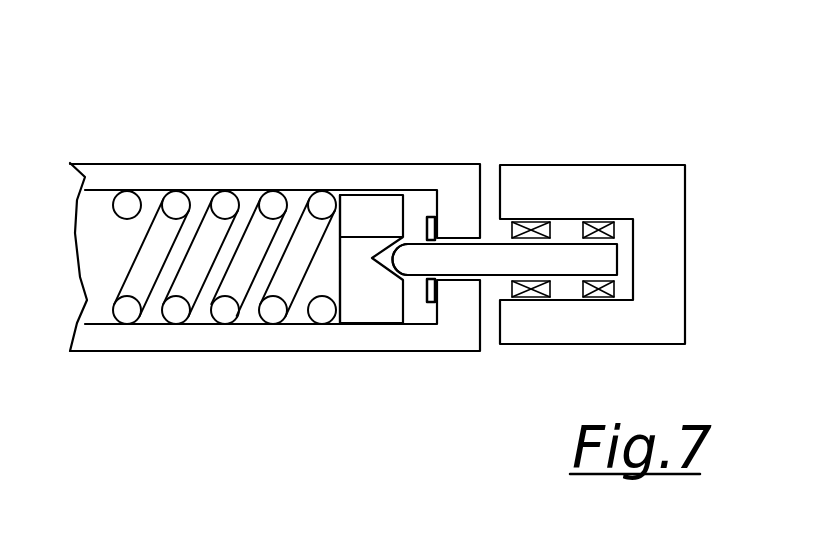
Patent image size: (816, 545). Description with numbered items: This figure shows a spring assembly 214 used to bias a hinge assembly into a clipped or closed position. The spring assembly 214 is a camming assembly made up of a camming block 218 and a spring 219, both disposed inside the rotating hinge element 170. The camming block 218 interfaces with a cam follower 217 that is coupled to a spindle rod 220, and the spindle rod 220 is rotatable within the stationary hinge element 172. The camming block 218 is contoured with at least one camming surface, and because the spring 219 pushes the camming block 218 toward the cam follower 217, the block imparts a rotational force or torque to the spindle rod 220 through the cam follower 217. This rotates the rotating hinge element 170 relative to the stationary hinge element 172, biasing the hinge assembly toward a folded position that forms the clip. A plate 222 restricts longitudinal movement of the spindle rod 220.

The rotating hinge element 170 is at (178, 160).
The stationary hinge element 172 is at (680, 165).
The spring assembly 214 is at (507, 144).
The cam follower 217 is at (402, 258).
The camming block 218 is at (366, 222).
The spring 219 is at (157, 216).
The spindle rod 220 is at (557, 258).
The plate 222 is at (433, 232).